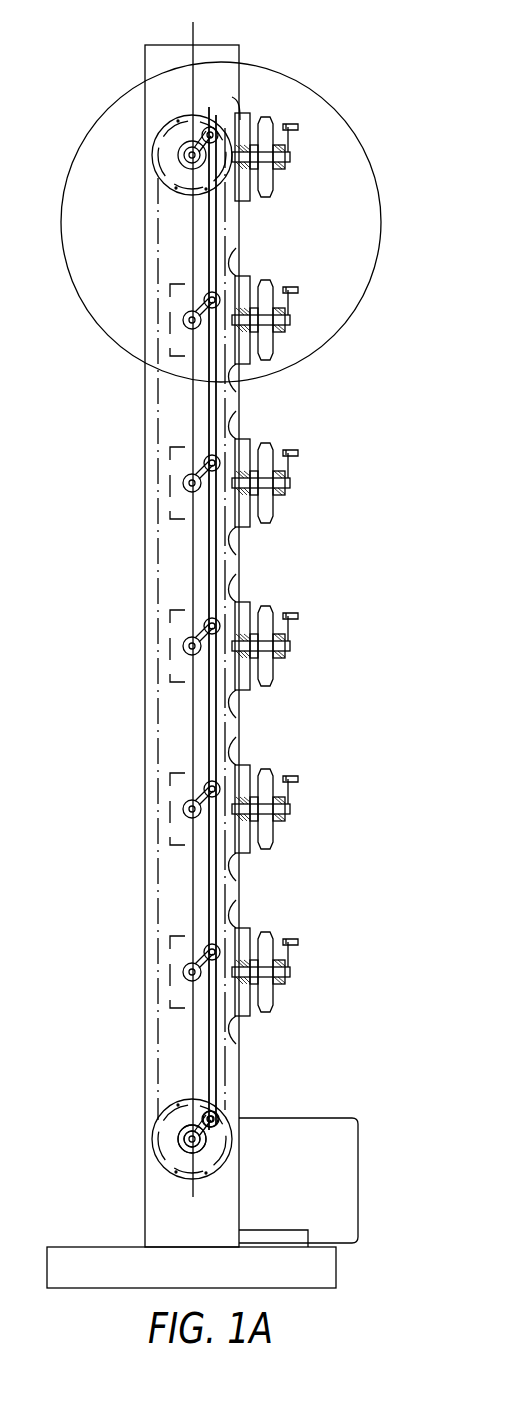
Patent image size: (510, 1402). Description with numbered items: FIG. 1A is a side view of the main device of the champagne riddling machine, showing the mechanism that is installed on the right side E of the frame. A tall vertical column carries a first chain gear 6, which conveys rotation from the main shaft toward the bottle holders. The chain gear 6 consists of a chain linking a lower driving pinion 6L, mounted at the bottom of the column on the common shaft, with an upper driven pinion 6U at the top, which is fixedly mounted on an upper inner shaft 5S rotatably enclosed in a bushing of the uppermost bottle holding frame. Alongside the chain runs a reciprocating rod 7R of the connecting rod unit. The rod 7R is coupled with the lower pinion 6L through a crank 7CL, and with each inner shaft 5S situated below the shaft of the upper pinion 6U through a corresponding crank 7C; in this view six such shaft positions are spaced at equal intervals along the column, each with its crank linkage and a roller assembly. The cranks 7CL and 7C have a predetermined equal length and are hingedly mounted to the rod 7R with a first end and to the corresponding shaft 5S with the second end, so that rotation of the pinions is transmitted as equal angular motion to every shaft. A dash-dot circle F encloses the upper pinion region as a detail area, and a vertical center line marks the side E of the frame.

The enlarged detail region F is at (127, 92).
The right side E is at (193, 598).
The upper pinion 6U is at (197, 112).
The lower pinion 6L is at (178, 1103).
The first chain gear 6 is at (232, 557).
The reciprocating rod 7R is at (215, 755).
The crank 7C is at (202, 790).
The crank 7CL is at (215, 1146).
The inner shaft 5S is at (184, 1136).